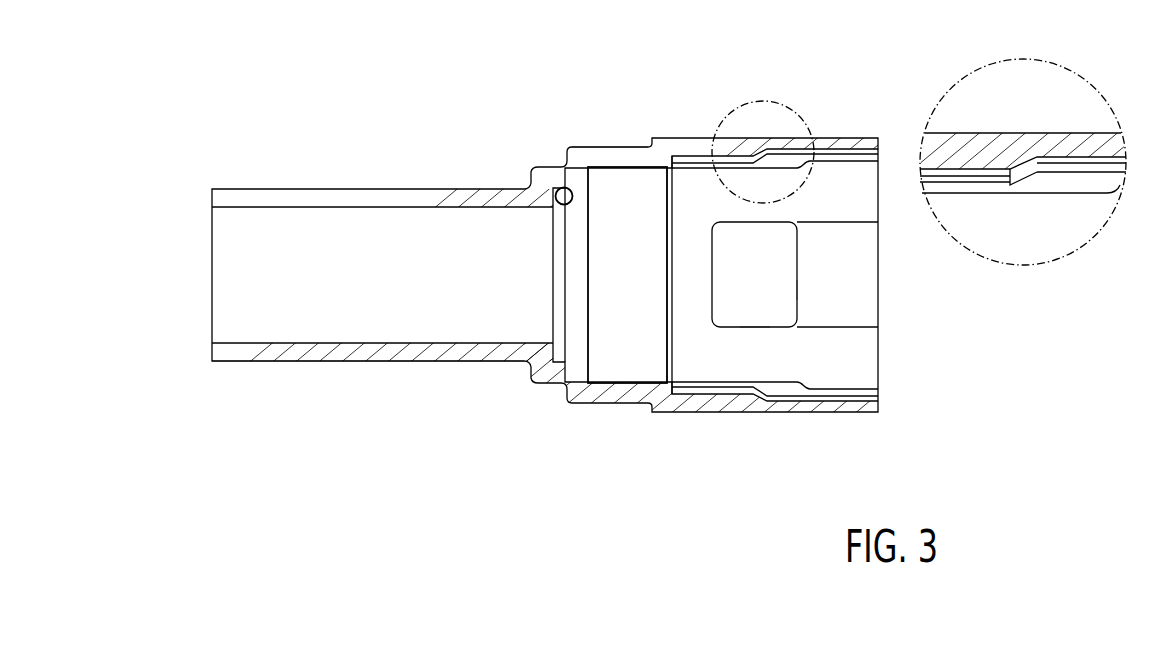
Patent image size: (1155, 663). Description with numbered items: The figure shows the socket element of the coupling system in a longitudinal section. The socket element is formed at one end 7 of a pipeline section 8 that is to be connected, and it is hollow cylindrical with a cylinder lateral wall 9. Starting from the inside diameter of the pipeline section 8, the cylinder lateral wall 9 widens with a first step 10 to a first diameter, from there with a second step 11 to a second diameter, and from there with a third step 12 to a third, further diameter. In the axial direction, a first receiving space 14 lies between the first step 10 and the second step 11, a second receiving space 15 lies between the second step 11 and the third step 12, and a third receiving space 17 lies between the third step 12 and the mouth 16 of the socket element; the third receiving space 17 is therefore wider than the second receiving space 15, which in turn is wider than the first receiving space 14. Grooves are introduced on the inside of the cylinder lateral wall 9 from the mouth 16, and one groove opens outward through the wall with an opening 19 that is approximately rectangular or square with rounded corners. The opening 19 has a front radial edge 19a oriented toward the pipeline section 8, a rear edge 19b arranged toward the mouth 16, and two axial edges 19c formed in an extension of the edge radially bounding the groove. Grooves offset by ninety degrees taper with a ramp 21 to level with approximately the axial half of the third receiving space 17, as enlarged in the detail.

The end 7 is at (782, 90).
The pipeline section 8 is at (328, 188).
The cylinder lateral wall 9 is at (508, 362).
The first step 10 is at (573, 188).
The second step 11 is at (608, 168).
The third step 12 is at (688, 150).
The first receiving space 14 is at (573, 260).
The second receiving space 15 is at (625, 360).
The mouth 16 is at (903, 305).
The third receiving space 17 is at (818, 372).
The opening 19 is at (727, 265).
The front radial edge 19a is at (712, 272).
The rear edge 19b is at (795, 288).
The axial edges 19c is at (752, 322).
The ramp 21 is at (1027, 170).